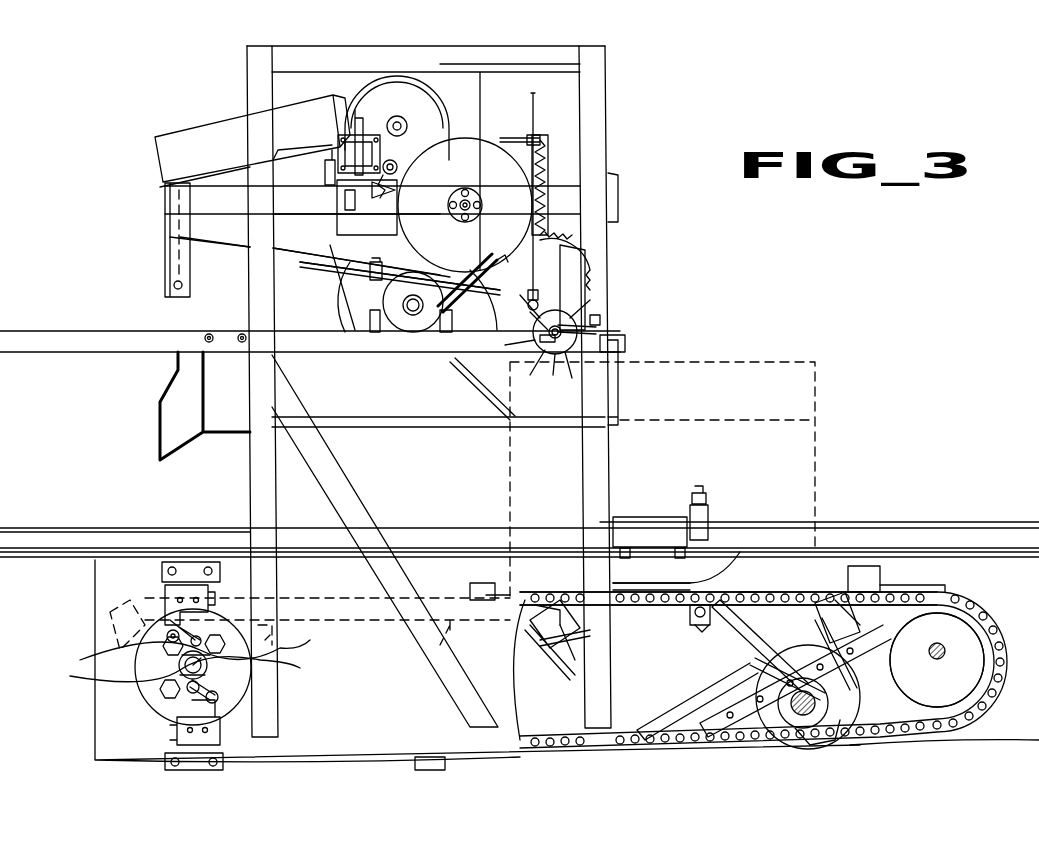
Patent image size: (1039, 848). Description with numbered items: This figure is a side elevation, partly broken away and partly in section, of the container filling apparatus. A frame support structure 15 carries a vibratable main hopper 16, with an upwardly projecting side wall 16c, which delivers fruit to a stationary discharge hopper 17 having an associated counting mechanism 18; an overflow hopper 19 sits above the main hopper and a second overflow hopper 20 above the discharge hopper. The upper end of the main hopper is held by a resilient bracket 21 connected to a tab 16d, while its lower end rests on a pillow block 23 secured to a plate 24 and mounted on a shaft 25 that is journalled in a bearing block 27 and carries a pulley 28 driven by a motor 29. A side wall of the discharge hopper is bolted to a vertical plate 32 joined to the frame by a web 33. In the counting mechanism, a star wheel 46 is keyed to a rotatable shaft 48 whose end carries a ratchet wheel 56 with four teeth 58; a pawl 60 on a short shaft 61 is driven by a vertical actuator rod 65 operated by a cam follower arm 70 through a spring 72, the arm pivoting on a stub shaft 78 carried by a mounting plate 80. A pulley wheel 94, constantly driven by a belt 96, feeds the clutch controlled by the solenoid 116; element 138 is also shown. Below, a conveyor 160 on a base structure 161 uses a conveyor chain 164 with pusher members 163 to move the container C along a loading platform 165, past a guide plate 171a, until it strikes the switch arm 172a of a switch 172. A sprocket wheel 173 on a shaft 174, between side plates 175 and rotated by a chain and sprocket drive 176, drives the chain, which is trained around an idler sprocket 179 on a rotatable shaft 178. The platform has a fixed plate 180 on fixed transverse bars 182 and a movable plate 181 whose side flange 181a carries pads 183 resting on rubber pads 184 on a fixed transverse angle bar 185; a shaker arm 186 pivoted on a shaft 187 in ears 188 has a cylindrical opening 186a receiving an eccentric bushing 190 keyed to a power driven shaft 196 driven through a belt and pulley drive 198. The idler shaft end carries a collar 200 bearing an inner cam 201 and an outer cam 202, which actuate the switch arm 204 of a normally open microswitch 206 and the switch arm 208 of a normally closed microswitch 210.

The frame support structure 15 is at (615, 96).
The main hopper 16 is at (310, 242).
The side wall 16c is at (318, 266).
The tab 16d is at (180, 246).
The stationary discharge hopper 17 is at (575, 296).
The counting mechanism 18 is at (621, 348).
The overflow hopper 19 is at (207, 162).
The second overflow hopper 20 is at (620, 208).
The resilient bracket 21 is at (190, 258).
The pillow block 23 is at (365, 280).
The plate 24 is at (368, 268).
The shaft 25 is at (397, 318).
The bearing block 27 is at (418, 318).
The pulley 28 is at (363, 303).
The motor 29 is at (413, 109).
The vertical plate 32 is at (498, 258).
The web 33 is at (495, 272).
The star wheel 46 is at (551, 365).
The rotatable shaft 48 is at (565, 325).
The ratchet wheel 56 is at (540, 345).
The tooth 58 is at (600, 320).
The pawl 60 is at (548, 312).
The short shaft 61 is at (530, 318).
The actuator rod 65 is at (535, 112).
The cam follower arm 70 is at (505, 148).
The spring 72 is at (548, 150).
The stub shaft 78 is at (392, 165).
The mounting plate 80 is at (412, 133).
The pulley wheel 94 is at (482, 171).
The belt 96 is at (405, 256).
The solenoid 116 is at (348, 150).
The gear 138 is at (588, 238).
The conveyor 160 is at (873, 594).
The base structure 161 is at (147, 521).
The pusher member 163 is at (100, 610).
The conveyor chain 164 is at (690, 600).
The loading platform 165 is at (681, 576).
The guide plate 171a is at (392, 394).
The switch 172 is at (708, 515).
The switch arm 172a is at (705, 494).
The sprocket wheel 173 is at (962, 633).
The shaft 174 is at (935, 665).
The side plate 175 is at (404, 677).
The chain and sprocket drive 176 is at (815, 655).
The rotatable shaft 178 is at (160, 690).
The idler sprocket 179 is at (240, 704).
The fixed plate 180 is at (349, 589).
The movable plate 181 is at (760, 600).
The side flange 181a is at (905, 585).
The fixed transverse bar 182 is at (275, 632).
The pad 183 is at (560, 605).
The rubber pad 184 is at (545, 648).
The fixed transverse angle bar 185 is at (565, 680).
The shaker arm 186 is at (720, 632).
The cylindrical opening 186a is at (800, 702).
The shaft 187 is at (690, 612).
The ear 188 is at (690, 625).
The eccentric bushing 190 is at (825, 705).
The power driven shaft 196 is at (790, 712).
The belt and pulley drive 198 is at (700, 695).
The collar 200 is at (120, 672).
The inner cam 201 is at (263, 668).
The outer cam 202 is at (120, 655).
The switch arm 204 is at (188, 695).
The normally open microswitch 206 is at (175, 740).
The switch arm 208 is at (265, 655).
The normally closed microswitch 210 is at (180, 594).
The container C is at (820, 430).